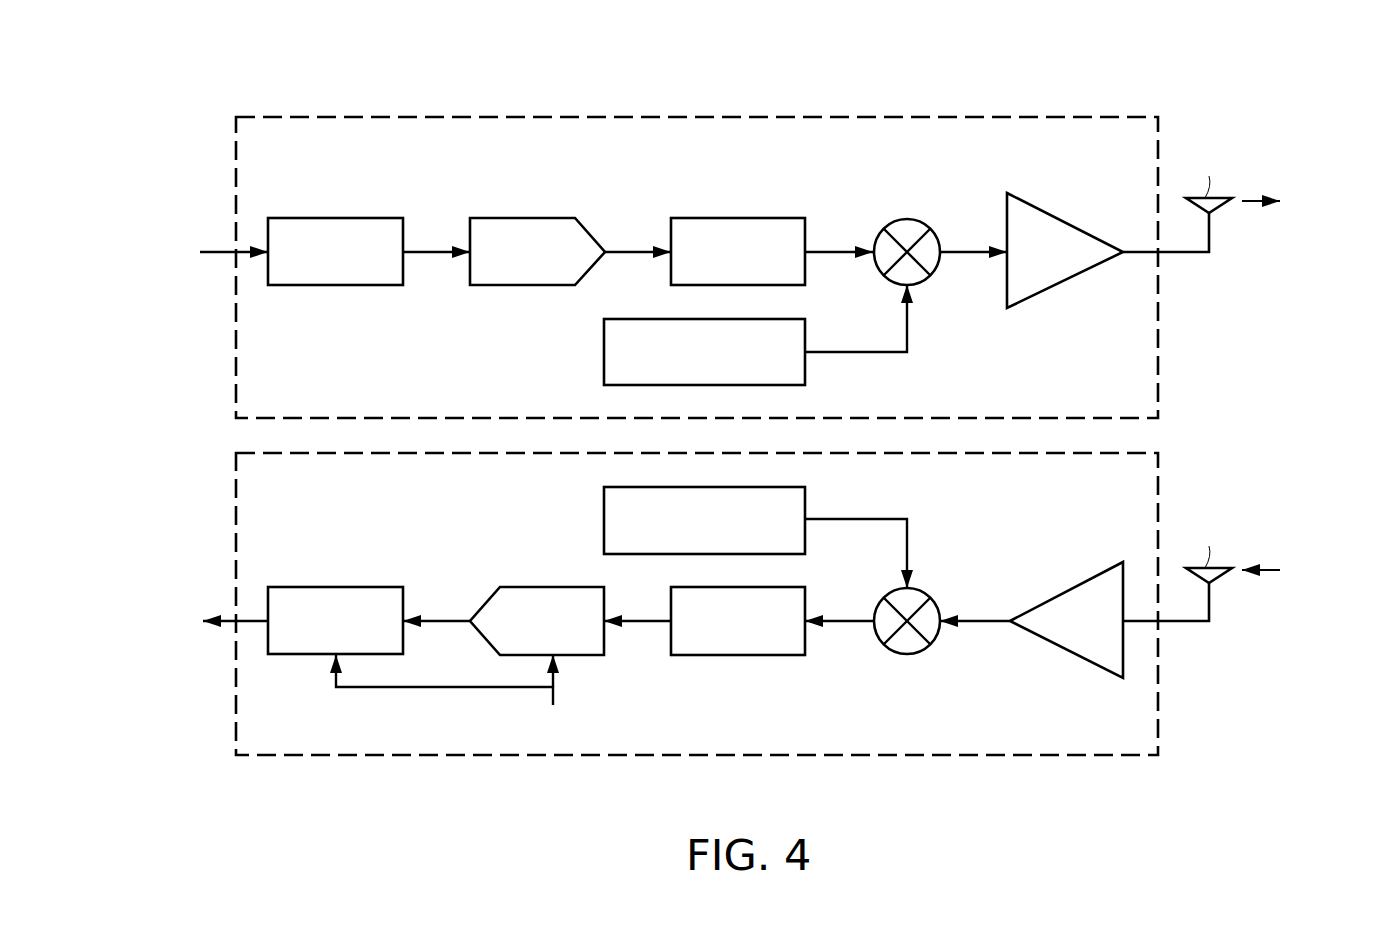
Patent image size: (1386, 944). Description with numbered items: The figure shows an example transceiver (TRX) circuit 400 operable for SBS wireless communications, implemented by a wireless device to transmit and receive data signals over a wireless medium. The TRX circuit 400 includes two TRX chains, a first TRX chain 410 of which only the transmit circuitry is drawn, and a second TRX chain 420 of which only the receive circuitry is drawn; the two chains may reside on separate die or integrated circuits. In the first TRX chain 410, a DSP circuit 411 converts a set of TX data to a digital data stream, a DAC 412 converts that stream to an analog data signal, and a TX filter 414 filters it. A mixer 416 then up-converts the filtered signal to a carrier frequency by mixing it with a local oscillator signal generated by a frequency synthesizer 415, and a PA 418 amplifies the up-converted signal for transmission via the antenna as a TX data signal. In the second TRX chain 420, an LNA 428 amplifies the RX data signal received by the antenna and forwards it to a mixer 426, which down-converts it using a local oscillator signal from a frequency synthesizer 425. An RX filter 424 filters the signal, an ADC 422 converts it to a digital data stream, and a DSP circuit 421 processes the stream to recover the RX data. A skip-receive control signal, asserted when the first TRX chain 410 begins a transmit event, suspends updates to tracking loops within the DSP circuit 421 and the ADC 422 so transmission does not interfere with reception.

The transceiver (TRX) circuit 400 is at (170, 86).
The first TRX chain 410 is at (414, 162).
The digital signal processing (DSP) circuit 411 is at (317, 274).
The digital-to-analog converter (DAC) 412 is at (510, 274).
The TX filter 414 is at (720, 274).
The frequency synthesizer 415 is at (687, 375).
The mixer 416 is at (888, 218).
The power amplifier (PA) 418 is at (1029, 274).
The second TRX chain 420 is at (414, 499).
The DSP circuit 421 is at (317, 644).
The analog-to-digital converter (ADC) 422 is at (528, 644).
The RX filter 424 is at (720, 644).
The frequency synthesizer 425 is at (687, 543).
The mixer 426 is at (889, 655).
The low-noise amplifier (LNA) 428 is at (1068, 644).